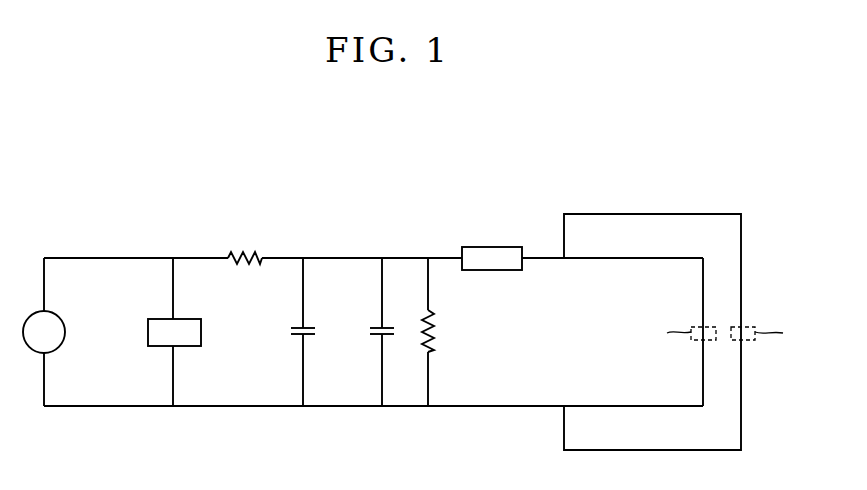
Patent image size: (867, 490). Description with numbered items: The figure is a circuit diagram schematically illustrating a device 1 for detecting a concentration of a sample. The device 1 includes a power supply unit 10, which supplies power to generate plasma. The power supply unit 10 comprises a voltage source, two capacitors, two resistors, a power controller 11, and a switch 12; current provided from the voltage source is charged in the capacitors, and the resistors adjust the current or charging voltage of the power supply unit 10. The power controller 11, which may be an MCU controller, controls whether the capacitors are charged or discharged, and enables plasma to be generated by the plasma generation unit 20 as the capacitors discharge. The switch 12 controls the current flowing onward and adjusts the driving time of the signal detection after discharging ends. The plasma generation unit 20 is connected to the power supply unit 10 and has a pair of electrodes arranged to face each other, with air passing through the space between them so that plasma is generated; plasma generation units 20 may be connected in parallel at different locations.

The device 1 is at (724, 138).
The power supply unit 10 is at (341, 236).
The power controller 11 is at (188, 317).
The switch 12 is at (493, 247).
The plasma generation unit 20 is at (774, 298).